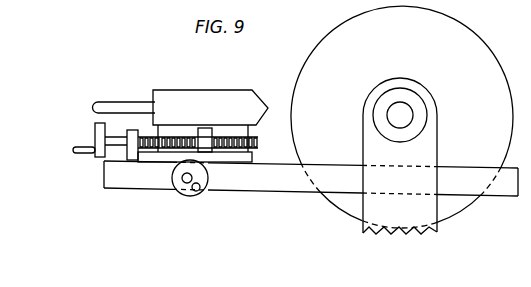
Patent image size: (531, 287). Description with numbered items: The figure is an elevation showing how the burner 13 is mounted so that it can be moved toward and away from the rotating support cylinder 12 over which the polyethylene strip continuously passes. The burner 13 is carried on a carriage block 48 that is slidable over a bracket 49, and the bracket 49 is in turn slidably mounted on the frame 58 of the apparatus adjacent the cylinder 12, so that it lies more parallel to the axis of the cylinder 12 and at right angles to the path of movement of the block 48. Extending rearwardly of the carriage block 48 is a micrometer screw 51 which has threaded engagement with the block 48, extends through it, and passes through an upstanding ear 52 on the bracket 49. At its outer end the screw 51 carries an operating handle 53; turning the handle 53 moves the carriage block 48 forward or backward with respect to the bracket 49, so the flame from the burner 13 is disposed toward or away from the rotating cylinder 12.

The cylinder 12 is at (402, 120).
The burner 13 is at (181, 121).
The carriage block 48 is at (204, 133).
The bracket 49 is at (155, 157).
The micrometer screw 51 is at (156, 136).
The upstanding ear 52 is at (131, 158).
The operating handle 53 is at (94, 140).
The frame 58 is at (218, 178).